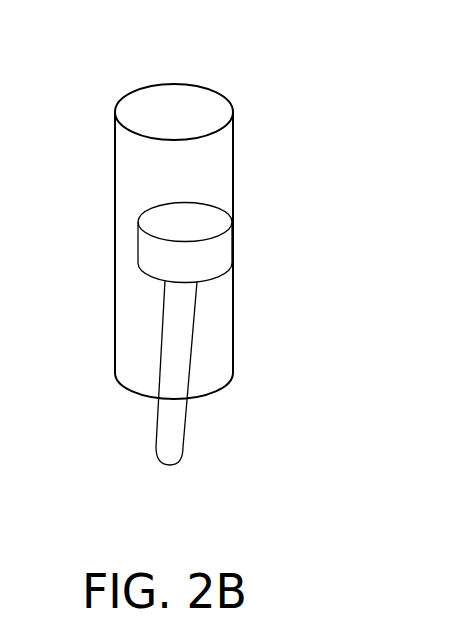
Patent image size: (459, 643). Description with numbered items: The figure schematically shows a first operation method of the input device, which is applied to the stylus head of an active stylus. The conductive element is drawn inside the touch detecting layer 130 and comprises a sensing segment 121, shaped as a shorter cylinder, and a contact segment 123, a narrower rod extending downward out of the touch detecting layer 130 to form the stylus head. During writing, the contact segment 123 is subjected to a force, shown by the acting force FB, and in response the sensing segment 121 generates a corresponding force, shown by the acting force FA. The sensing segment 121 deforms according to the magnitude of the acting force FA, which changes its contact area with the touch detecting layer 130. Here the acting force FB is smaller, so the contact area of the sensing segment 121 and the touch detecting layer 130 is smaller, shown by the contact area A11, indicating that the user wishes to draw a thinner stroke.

The touch detecting layer 130 is at (132, 92).
The sensing segment 121 is at (155, 268).
The contact segment 123 is at (168, 422).
The acting force FA is at (165, 253).
The acting force FB is at (200, 443).
The contact area A11 is at (233, 222).